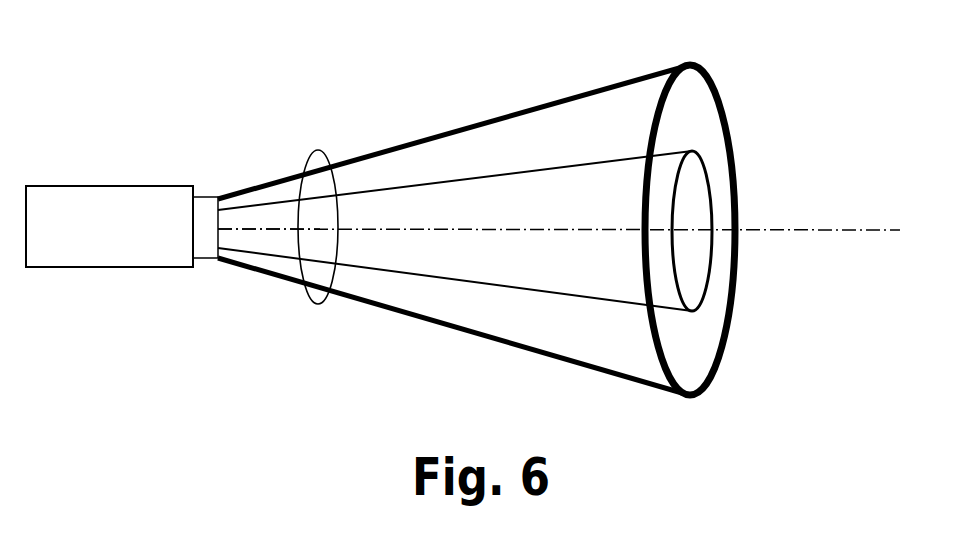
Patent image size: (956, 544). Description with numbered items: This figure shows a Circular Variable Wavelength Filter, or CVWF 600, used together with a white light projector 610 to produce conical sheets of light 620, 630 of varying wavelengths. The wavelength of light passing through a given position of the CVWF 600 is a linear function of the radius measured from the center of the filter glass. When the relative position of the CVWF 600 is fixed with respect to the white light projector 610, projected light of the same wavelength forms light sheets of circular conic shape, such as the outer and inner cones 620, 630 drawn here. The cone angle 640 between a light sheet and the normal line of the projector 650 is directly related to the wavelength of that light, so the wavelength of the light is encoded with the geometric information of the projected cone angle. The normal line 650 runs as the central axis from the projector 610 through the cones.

The Circular Variable Wavelength Filter (CVWF) 600 is at (314, 143).
The white light projector 610 is at (134, 238).
The conical light sheet 620 is at (437, 133).
The conical light sheet 630 is at (552, 167).
The cone angle 640 is at (255, 228).
The normal line of the projector 650 is at (793, 230).